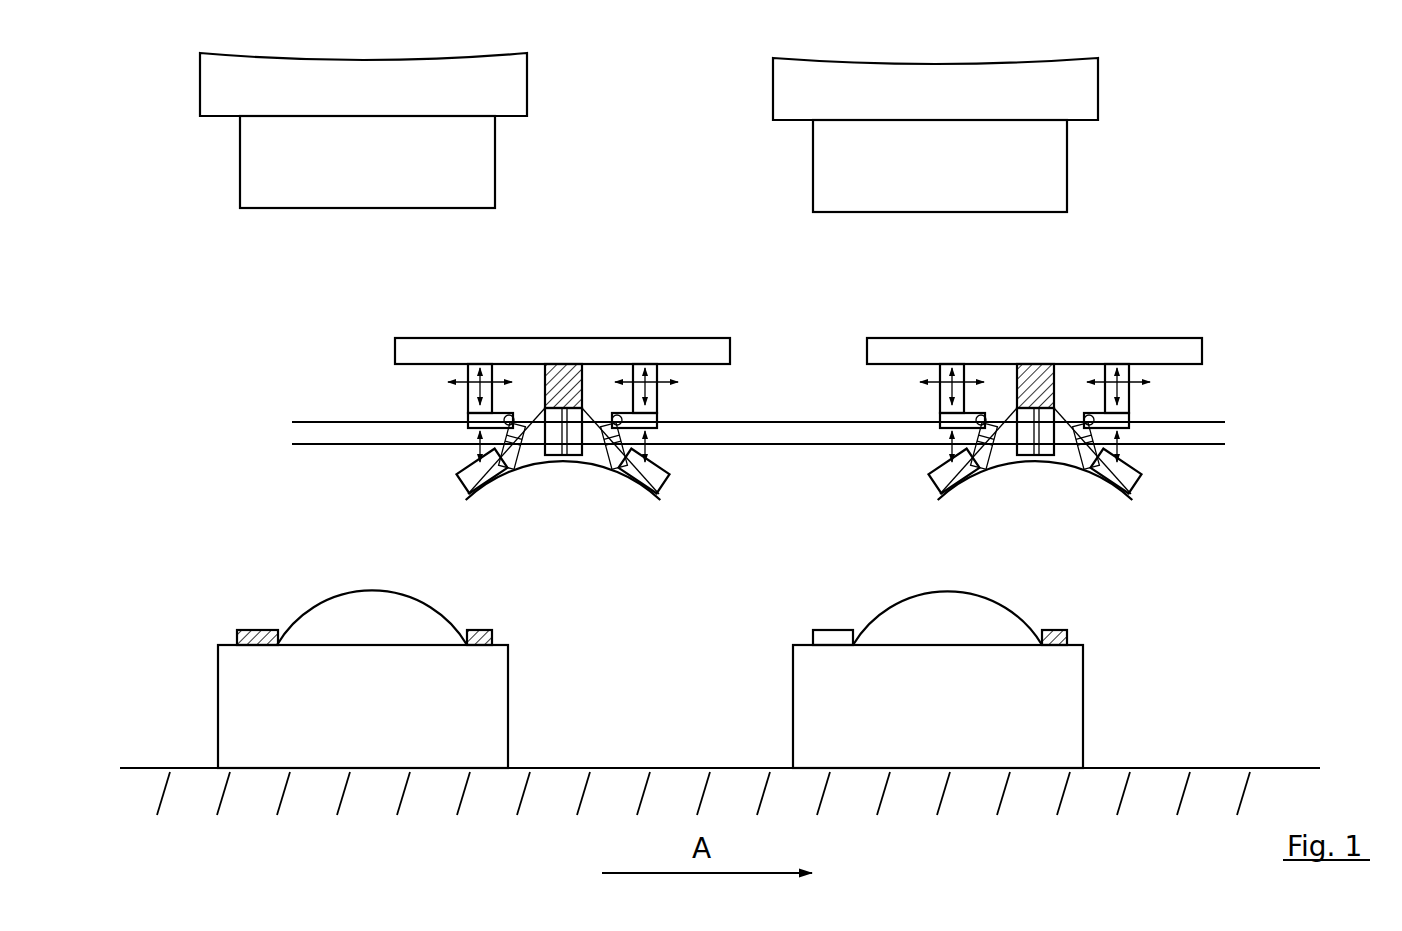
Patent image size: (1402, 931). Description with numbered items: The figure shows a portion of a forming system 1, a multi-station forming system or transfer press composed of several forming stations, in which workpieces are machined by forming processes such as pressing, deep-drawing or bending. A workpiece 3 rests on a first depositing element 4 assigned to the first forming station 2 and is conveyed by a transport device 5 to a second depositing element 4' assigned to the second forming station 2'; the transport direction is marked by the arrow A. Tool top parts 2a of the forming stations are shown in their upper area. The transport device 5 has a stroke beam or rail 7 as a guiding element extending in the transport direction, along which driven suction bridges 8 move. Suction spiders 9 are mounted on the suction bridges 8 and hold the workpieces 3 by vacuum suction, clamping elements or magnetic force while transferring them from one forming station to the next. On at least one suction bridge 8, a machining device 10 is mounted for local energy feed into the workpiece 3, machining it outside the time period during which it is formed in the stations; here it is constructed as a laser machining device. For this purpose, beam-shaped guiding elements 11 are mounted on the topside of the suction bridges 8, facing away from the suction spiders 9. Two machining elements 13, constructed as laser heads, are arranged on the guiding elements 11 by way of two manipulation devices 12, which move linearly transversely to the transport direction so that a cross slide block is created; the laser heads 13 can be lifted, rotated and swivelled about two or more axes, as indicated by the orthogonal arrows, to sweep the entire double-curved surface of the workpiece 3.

The forming system 1 is at (725, 166).
The forming station 2 is at (363, 706).
The second forming station 2' is at (938, 706).
The tool top part 2a is at (465, 197).
The workpiece 3 is at (535, 465).
The first depositing element 4 is at (364, 581).
The second depositing element 4' is at (940, 581).
The transport device 5 is at (702, 407).
The rail 7 is at (810, 435).
The suction bridge 8 is at (570, 365).
The suction spider 9 is at (662, 465).
The machining device 10 is at (555, 483).
The guiding element 11 is at (517, 345).
The manipulation device 12 is at (475, 398).
The machining element 13 is at (518, 468).